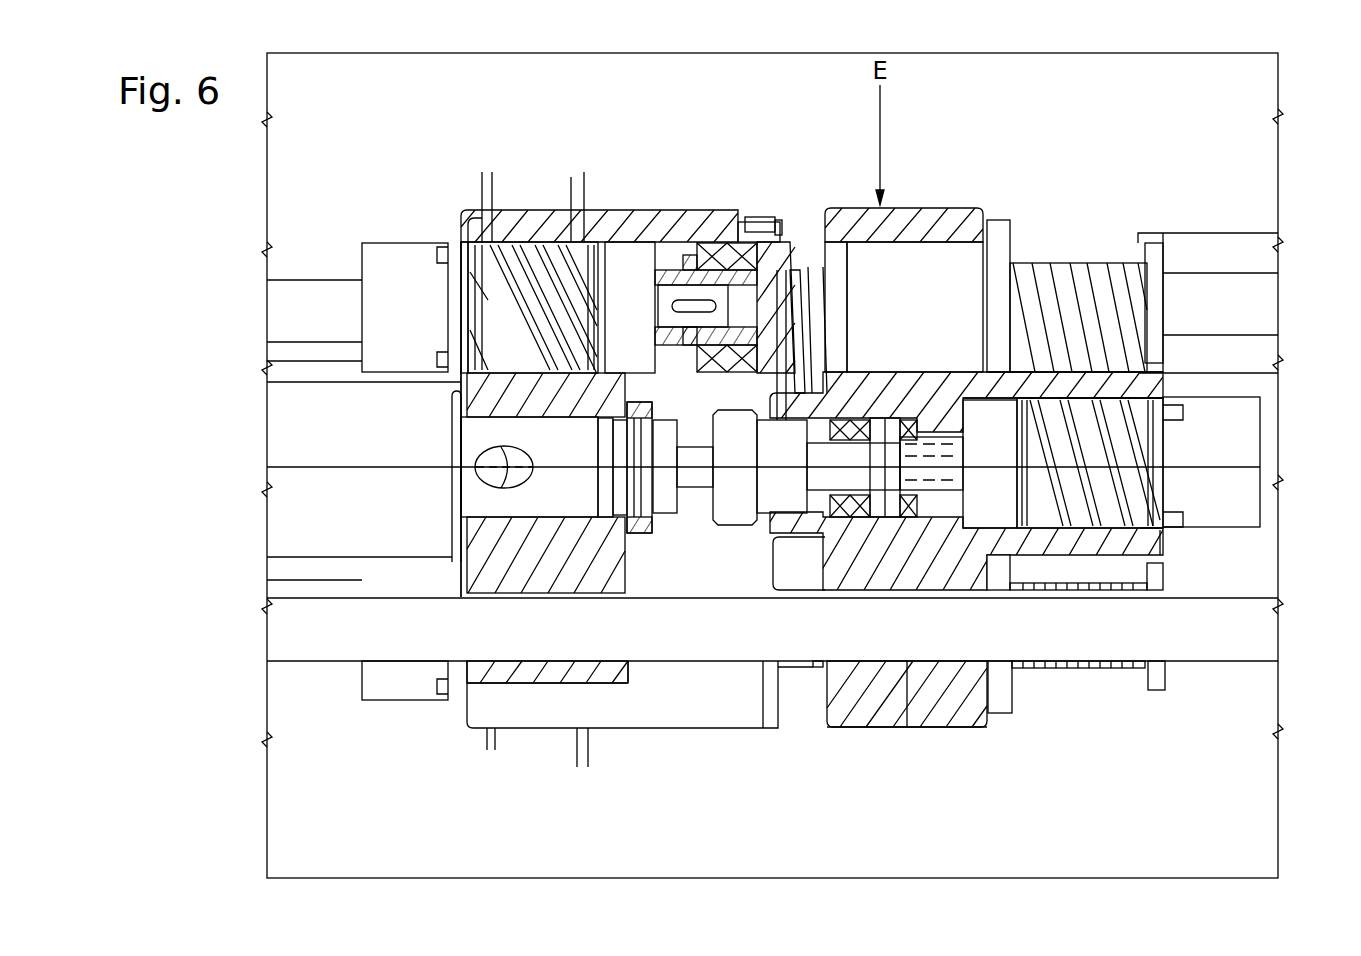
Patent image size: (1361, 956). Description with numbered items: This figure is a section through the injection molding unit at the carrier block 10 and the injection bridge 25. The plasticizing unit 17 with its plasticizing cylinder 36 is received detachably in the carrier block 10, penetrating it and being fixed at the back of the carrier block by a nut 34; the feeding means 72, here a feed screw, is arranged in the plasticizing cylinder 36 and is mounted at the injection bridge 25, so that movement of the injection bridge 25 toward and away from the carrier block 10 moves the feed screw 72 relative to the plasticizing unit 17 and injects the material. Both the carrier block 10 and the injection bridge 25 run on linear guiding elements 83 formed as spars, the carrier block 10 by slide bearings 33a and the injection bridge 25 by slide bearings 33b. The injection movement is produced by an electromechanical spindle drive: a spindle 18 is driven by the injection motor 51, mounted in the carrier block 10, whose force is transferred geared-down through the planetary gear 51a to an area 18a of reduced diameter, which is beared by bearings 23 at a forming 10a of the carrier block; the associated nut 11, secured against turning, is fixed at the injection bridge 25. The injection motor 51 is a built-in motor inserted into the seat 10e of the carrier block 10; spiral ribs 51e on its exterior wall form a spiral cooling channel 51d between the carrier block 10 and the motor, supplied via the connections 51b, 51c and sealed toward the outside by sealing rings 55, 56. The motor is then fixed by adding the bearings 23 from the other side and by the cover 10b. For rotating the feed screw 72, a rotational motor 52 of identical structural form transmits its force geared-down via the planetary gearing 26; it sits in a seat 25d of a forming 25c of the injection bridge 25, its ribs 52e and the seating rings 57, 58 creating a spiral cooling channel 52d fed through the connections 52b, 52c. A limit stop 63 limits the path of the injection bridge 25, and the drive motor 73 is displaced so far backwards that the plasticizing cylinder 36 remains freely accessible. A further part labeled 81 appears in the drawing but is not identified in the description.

The carrier block 10 is at (522, 220).
The forming of the carrier block 10a is at (678, 225).
The cover 10b is at (792, 265).
The seat of the carrier block 10e is at (452, 393).
The nut 11 is at (923, 292).
The plasticizing unit 17 is at (317, 457).
The spindle 18 is at (1055, 290).
The area with reduced diameter 18a is at (778, 270).
The bearings 23 is at (738, 232).
The injection bridge 25 is at (918, 232).
The forming of the injection bridge 25c is at (1060, 395).
The seat 25d is at (1045, 365).
The gearing 26 is at (997, 495).
The slide bearings 33a is at (518, 667).
The slide bearings 33b is at (905, 665).
The nut 34 is at (640, 535).
The plasticizing cylinder 36 is at (540, 460).
The injection motor 51 is at (392, 262).
The gear 51a is at (618, 265).
The connection 51b is at (585, 240).
The connection 51c is at (488, 180).
The cooling channel 51d is at (470, 242).
The ribs 51e is at (570, 240).
The rotational motor 52 is at (1223, 447).
The connection 52b is at (1112, 330).
The connection 52c is at (1030, 330).
The cooling channel 52d is at (1165, 548).
The ribs 52e is at (1147, 530).
The sealing ring 55 is at (461, 235).
The sealing ring 56 is at (607, 273).
The seating ring 57 is at (1016, 433).
The seating ring 58 is at (1070, 418).
The limit stop 63 is at (1157, 260).
The feeding means 72 is at (707, 525).
The drive motor 73 is at (1213, 250).
The module 81 is at (1120, 867).
The linear guiding elements 83 is at (273, 297).